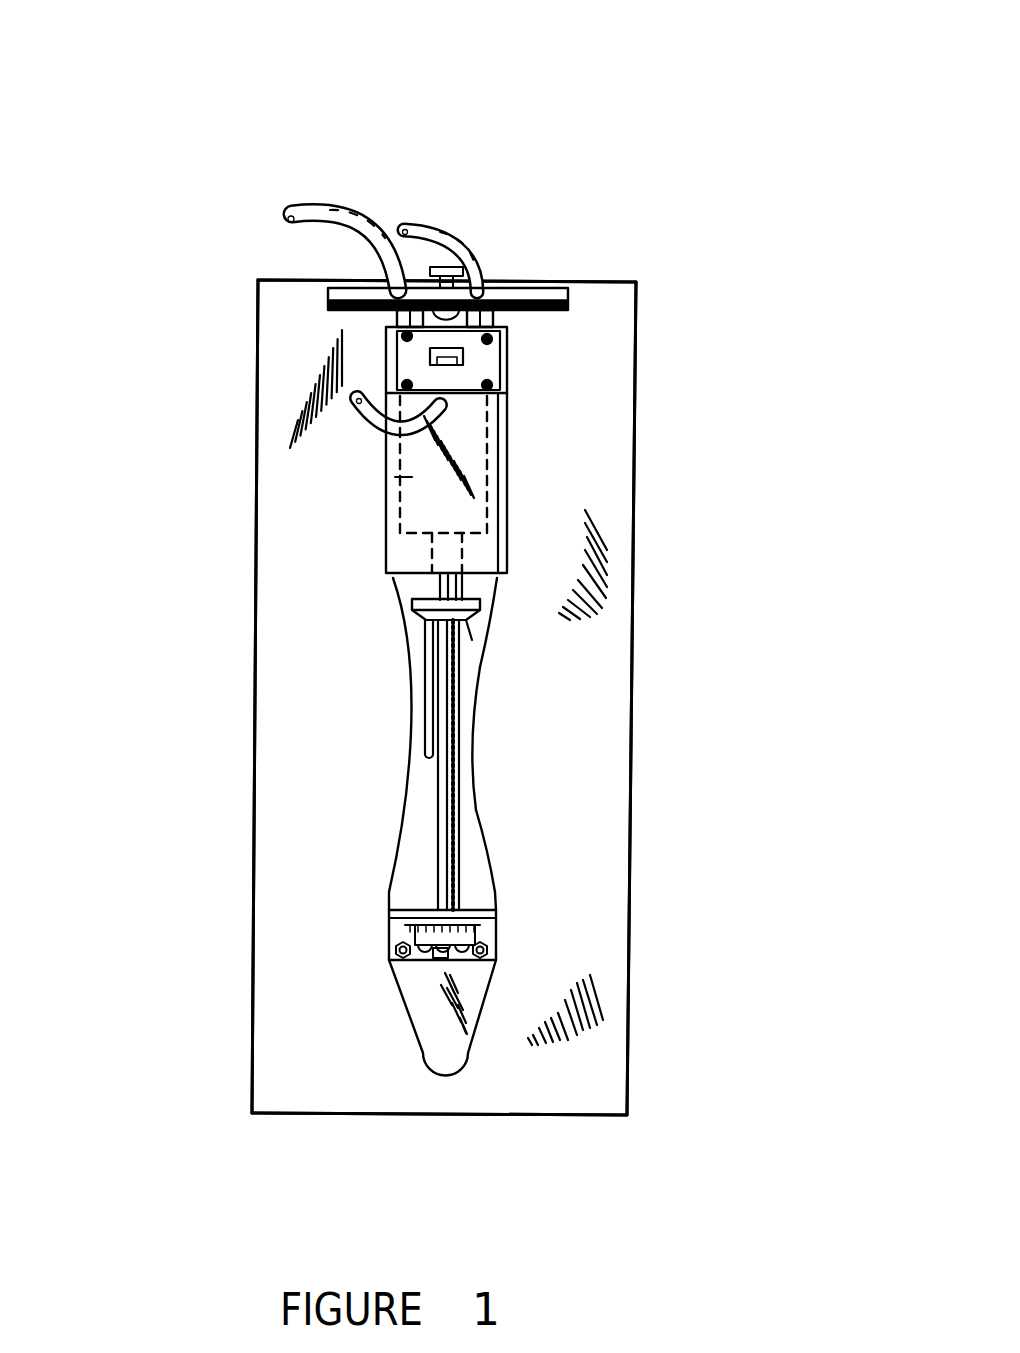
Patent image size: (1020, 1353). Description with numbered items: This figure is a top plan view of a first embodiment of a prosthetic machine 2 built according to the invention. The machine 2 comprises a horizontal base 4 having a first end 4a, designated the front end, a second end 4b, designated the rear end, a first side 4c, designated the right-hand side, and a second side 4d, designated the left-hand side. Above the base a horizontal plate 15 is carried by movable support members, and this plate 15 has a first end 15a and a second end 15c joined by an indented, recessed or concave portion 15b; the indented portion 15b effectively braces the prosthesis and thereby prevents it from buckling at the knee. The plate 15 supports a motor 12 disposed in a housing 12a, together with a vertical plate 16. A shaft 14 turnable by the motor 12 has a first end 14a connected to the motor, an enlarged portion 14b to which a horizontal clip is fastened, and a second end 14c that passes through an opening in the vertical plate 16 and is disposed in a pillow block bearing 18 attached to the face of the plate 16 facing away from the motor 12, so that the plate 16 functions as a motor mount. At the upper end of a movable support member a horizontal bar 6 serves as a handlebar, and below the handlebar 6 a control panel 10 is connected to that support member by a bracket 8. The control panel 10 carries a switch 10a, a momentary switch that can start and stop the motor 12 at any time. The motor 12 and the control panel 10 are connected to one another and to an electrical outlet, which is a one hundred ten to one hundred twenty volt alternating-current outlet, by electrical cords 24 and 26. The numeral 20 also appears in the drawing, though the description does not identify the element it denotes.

The prosthetic machine 2 is at (691, 91).
The horizontal base 4 is at (805, 410).
The first end 4a is at (573, 1115).
The second end 4b is at (605, 283).
The first side 4c is at (636, 795).
The second side 4d is at (254, 850).
The horizontal bar 6 is at (526, 298).
The bracket 8 is at (450, 318).
The control panel 10 is at (400, 368).
The switch 10a is at (402, 349).
The motor 12 is at (403, 478).
The housing 12a is at (507, 456).
The shaft 14 is at (232, 683).
The first end 14a is at (412, 604).
The enlarged portion 14b is at (474, 614).
The second end 14c is at (441, 812).
The horizontal plate 15 is at (727, 659).
The first end 15a is at (497, 895).
The indented portion 15b is at (475, 782).
The second end 15c is at (490, 600).
The vertical plate 16 is at (497, 921).
The pillow block bearing 18 is at (392, 944).
The blade 20 is at (440, 968).
The electrical cord 24 is at (441, 216).
The electrical cord 26 is at (332, 214).